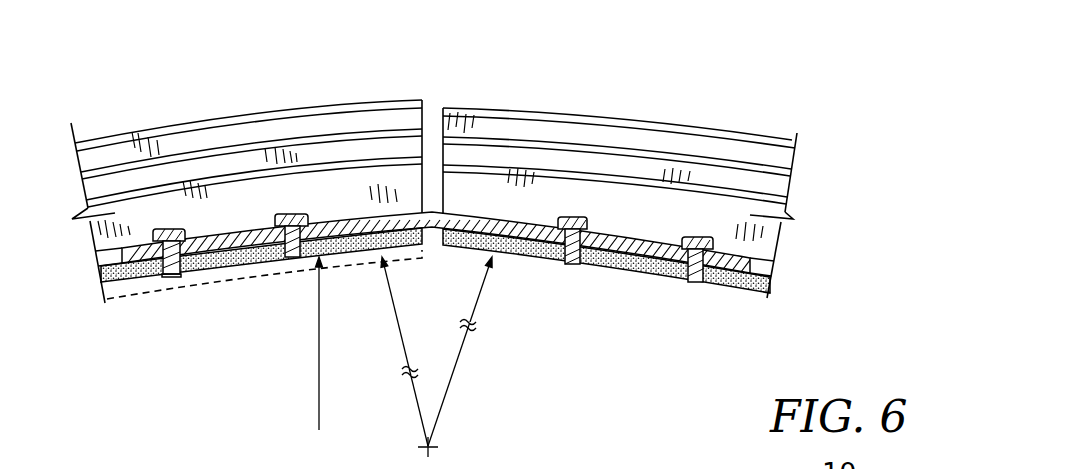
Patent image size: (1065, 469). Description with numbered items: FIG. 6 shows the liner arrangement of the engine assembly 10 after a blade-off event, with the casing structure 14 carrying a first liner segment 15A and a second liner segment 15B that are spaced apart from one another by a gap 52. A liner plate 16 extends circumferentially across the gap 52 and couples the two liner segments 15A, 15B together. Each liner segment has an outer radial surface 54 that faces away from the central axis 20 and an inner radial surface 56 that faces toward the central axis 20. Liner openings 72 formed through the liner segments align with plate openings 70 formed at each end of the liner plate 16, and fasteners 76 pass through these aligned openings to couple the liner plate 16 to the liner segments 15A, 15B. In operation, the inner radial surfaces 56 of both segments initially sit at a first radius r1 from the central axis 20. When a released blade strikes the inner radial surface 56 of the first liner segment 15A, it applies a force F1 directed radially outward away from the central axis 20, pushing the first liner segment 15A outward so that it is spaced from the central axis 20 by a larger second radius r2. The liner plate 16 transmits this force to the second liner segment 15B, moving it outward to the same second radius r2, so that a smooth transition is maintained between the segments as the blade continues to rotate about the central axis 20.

The track assembly 10 is at (742, 118).
The shell 14 is at (482, 100).
The first liner segment 15A is at (268, 100).
The second liner segment 15B is at (598, 102).
The liner plate 16 is at (748, 257).
The central axis 20 is at (432, 446).
The gap 52 is at (428, 100).
The outer radial surface 54 is at (102, 262).
The inner radial surface 56 is at (127, 284).
The plate openings 70 is at (292, 203).
The liner openings 72 is at (179, 287).
The fasteners 76 is at (169, 224).
The force F1 is at (318, 348).
The first radius r1 is at (480, 300).
The second radius r2 is at (403, 350).